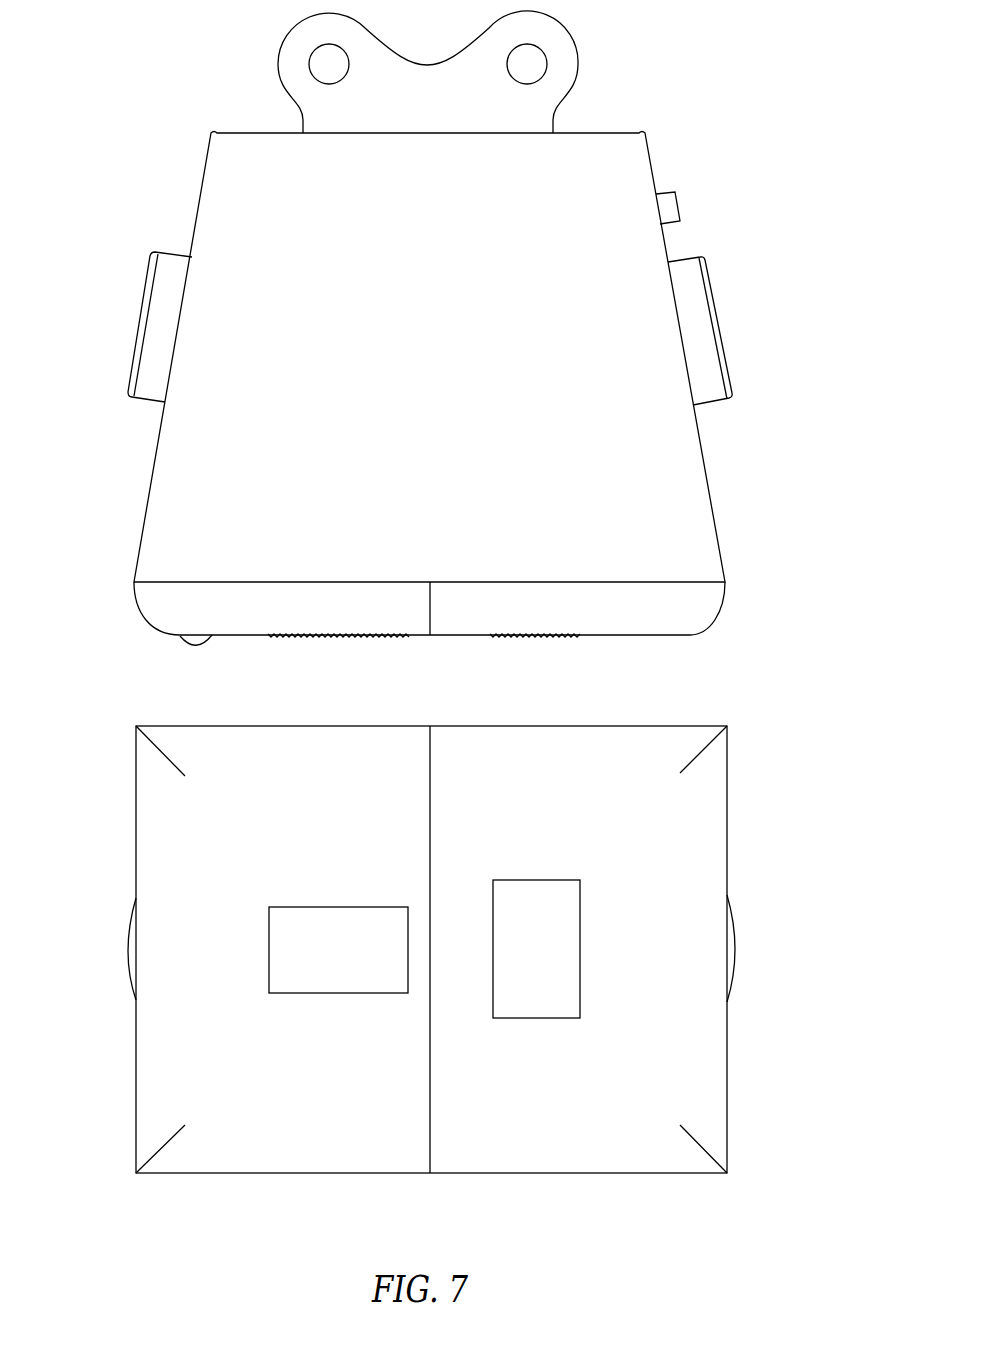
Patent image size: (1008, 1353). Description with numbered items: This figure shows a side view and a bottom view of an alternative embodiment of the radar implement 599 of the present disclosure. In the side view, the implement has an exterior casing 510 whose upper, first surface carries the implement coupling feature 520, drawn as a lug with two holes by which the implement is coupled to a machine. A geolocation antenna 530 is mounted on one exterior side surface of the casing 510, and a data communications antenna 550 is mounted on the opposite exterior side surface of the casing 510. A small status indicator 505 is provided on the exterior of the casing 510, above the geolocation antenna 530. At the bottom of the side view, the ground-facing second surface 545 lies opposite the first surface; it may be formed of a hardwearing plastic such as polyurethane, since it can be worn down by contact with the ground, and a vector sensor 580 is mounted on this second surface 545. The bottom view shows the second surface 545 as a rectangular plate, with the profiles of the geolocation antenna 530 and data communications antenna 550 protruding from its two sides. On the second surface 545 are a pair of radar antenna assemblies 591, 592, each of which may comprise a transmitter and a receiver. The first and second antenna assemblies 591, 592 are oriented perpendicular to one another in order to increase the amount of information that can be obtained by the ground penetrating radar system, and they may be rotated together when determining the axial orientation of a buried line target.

The weight assembly 599 is at (760, 50).
The implement coupling feature 520 is at (561, 42).
The casing 510 is at (203, 181).
The status indicator 505 is at (680, 207).
The data communications antenna 550 is at (157, 322).
The geolocation antenna 530 is at (704, 322).
The vector sensor 580 is at (196, 643).
The second surface 545 is at (632, 742).
The first antenna assembly 591 is at (567, 915).
The second antenna assembly 592 is at (283, 934).